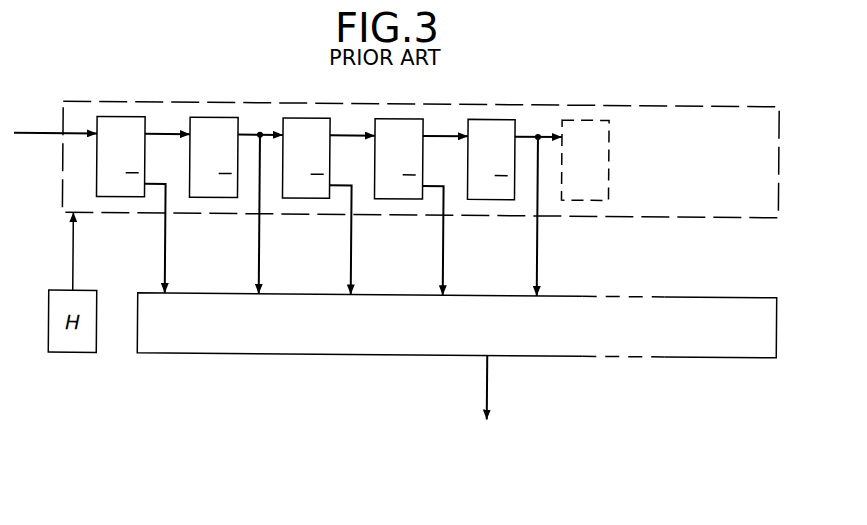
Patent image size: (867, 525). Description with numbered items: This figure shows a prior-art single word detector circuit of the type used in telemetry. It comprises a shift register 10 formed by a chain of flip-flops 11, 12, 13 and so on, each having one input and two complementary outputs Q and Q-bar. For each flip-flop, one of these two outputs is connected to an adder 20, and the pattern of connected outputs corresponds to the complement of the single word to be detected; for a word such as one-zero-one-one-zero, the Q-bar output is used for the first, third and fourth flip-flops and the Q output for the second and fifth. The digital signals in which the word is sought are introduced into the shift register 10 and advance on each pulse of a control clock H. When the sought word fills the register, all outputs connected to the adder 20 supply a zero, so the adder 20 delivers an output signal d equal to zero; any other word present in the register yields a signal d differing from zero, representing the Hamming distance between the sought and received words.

The shift register 10 is at (672, 114).
The flip-flop 11 is at (117, 127).
The flip-flop 12 is at (208, 128).
The flip-flop 13 is at (302, 128).
The adder 20 is at (472, 329).